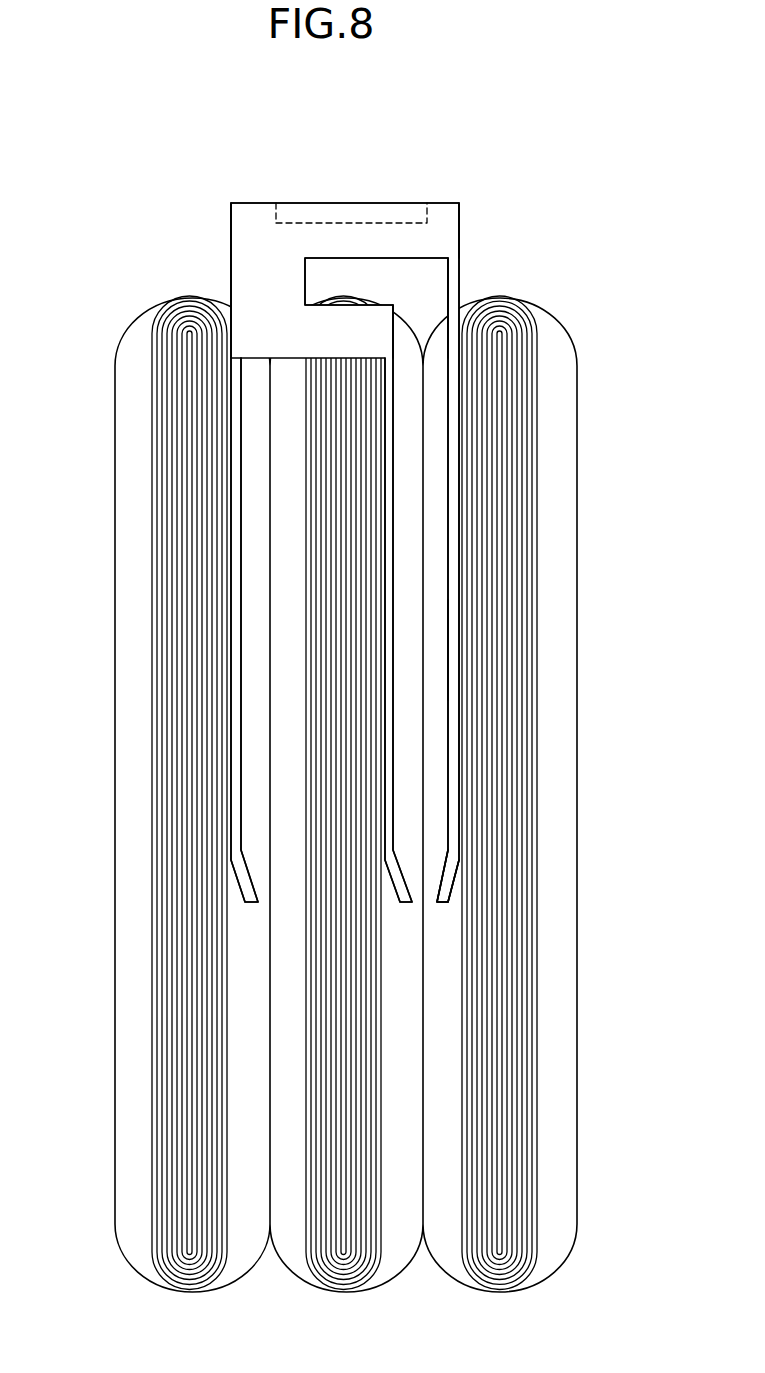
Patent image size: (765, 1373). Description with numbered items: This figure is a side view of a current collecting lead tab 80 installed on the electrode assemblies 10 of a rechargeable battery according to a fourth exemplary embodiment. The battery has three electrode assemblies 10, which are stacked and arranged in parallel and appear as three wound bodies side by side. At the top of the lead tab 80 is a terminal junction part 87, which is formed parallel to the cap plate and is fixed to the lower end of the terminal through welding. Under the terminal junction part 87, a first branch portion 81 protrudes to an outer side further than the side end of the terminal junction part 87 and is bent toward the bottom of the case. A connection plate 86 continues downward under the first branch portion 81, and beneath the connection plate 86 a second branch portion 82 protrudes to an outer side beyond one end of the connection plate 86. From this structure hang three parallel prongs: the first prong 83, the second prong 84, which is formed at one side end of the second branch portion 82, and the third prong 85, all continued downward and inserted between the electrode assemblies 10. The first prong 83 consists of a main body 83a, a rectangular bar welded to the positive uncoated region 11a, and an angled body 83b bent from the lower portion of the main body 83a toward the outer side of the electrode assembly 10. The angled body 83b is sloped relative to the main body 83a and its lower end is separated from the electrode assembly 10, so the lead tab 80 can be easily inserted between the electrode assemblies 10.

The electrode assembly 10 is at (132, 747).
The positive uncoated region 11a is at (527, 455).
The current collecting lead tab 80 is at (291, 182).
The first branch portion 81 is at (447, 223).
The second branch portion 82 is at (362, 330).
The first prong 83 is at (453, 668).
The main body 83a is at (460, 638).
The angled body 83b is at (458, 866).
The second prong 84 is at (392, 578).
The third prong 85 is at (233, 577).
The connection plate 86 is at (252, 275).
The terminal junction part 87 is at (388, 217).